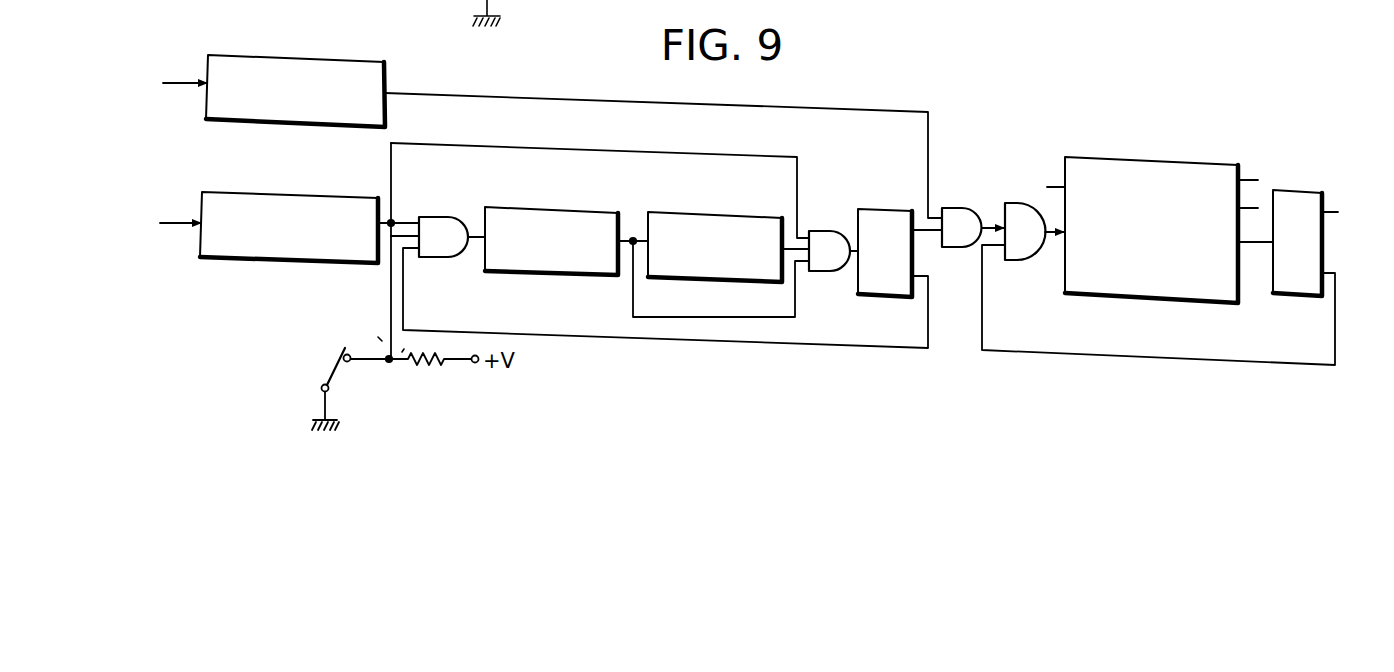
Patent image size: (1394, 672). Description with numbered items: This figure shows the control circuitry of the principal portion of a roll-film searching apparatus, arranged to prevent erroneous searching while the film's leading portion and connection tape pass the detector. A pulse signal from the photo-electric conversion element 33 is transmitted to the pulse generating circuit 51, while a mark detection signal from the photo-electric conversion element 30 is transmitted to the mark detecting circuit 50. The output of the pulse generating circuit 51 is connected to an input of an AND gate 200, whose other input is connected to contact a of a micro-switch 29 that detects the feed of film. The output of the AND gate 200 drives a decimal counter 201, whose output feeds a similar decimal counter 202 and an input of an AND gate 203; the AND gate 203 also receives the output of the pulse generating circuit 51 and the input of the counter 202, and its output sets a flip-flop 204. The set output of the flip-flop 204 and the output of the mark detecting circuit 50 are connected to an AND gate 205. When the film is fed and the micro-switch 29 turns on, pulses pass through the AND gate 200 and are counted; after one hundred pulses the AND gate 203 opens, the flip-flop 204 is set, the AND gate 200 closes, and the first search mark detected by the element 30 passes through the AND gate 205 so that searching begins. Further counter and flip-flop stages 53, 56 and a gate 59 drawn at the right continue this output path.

The micro-switch 29 is at (327, 367).
The photo-electric conversion element 30 is at (185, 68).
The photo-electric conversion element 33 is at (180, 207).
The mark detecting circuit 50 is at (318, 58).
The pulse generating circuit 51 is at (287, 193).
The counter 53 is at (1150, 157).
The flip-flop 56 is at (1300, 190).
The AND gate 59 is at (1025, 203).
The AND gate 200 is at (440, 217).
The decimal counter 201 is at (537, 207).
The decimal counter 202 is at (703, 212).
The AND gate 203 is at (827, 231).
The flip-flop 204 is at (895, 209).
The AND gate 205 is at (963, 208).